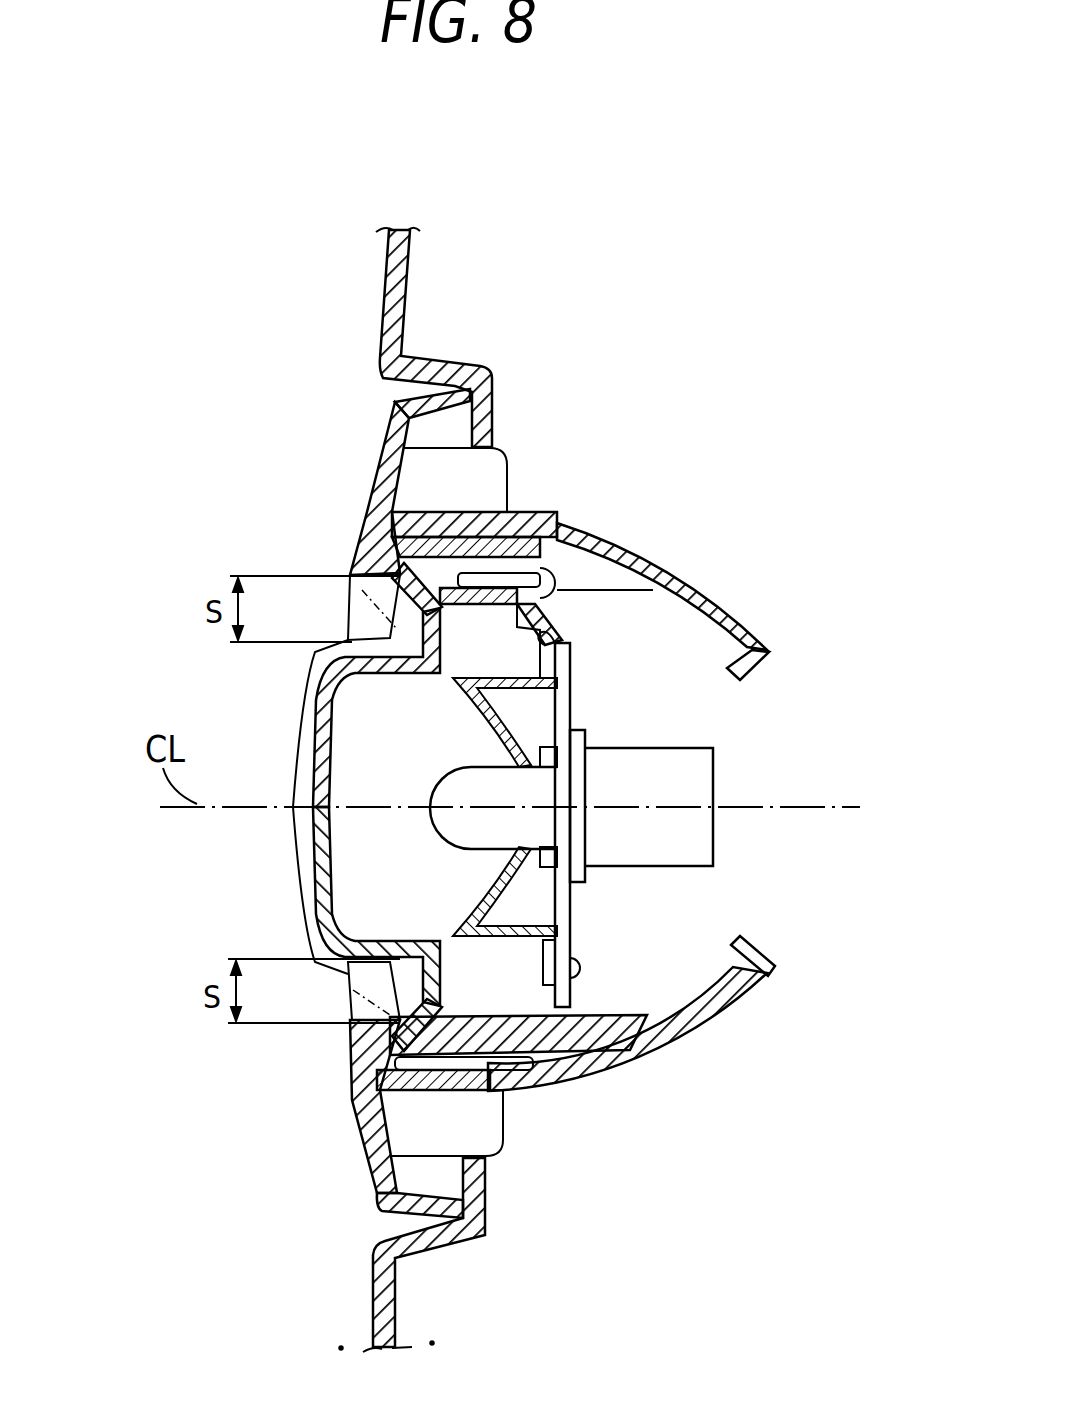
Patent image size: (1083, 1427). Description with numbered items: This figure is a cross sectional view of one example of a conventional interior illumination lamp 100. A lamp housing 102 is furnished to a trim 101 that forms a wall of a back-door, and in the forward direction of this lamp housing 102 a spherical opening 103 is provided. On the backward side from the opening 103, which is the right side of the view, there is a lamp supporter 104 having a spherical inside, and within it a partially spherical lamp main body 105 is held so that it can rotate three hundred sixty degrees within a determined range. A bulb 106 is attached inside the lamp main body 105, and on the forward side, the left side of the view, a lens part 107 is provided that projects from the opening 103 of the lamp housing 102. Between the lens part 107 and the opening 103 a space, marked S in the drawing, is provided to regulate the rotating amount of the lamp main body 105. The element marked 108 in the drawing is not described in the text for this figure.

The interior illumination lamp 100 is at (167, 375).
The trim 101 is at (389, 296).
The lamp housing 102 is at (377, 1192).
The spherical opening 103 is at (356, 578).
The lamp supporter 104 is at (692, 590).
The lamp main body 105 is at (703, 703).
The bulb 106 is at (456, 790).
The lens part 107 is at (293, 858).
The reflector 108 is at (492, 873).